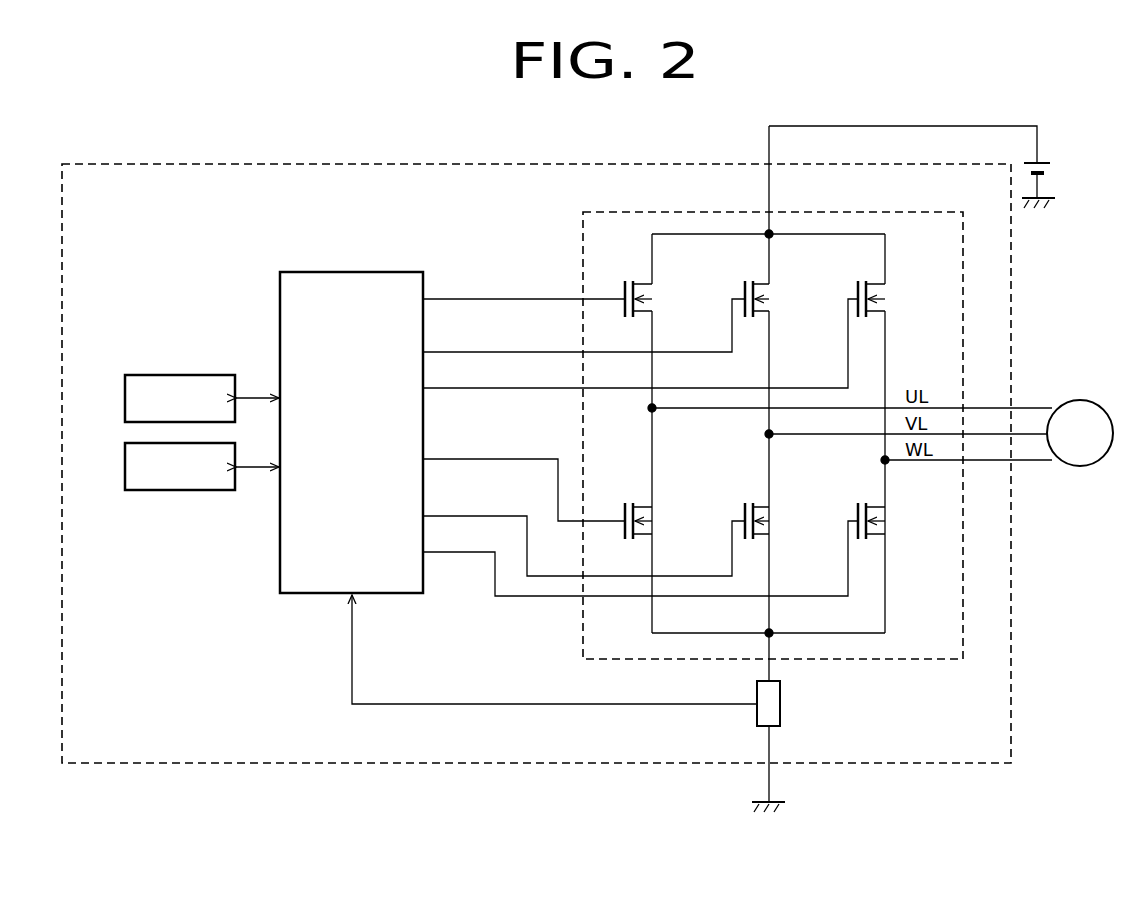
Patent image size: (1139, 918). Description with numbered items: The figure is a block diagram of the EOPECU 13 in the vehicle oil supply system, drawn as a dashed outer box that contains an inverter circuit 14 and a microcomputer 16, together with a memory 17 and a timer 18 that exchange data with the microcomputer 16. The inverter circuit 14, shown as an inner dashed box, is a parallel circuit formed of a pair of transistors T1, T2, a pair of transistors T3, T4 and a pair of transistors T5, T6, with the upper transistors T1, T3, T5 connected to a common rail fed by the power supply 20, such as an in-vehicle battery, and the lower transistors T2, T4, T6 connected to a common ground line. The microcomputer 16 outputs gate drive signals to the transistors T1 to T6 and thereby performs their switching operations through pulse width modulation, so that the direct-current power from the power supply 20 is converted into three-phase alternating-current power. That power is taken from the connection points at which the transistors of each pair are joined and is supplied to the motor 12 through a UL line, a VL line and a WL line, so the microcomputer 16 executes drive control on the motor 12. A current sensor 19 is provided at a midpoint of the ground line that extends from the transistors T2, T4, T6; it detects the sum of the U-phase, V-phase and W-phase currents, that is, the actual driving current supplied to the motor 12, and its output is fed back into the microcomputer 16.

The motor 12 is at (1088, 401).
The EOPECU 13 is at (520, 164).
The inverter circuit 14 is at (866, 212).
The microcomputer 16 is at (385, 272).
The memory 17 is at (125, 399).
The timer 18 is at (125, 466).
The current sensor 19 is at (780, 700).
The power supply 20 is at (1044, 162).
The transistor T1 is at (624, 284).
The transistor T2 is at (624, 507).
The transistor T3 is at (744, 284).
The transistor T4 is at (744, 507).
The transistor T5 is at (857, 284).
The transistor T6 is at (857, 507).